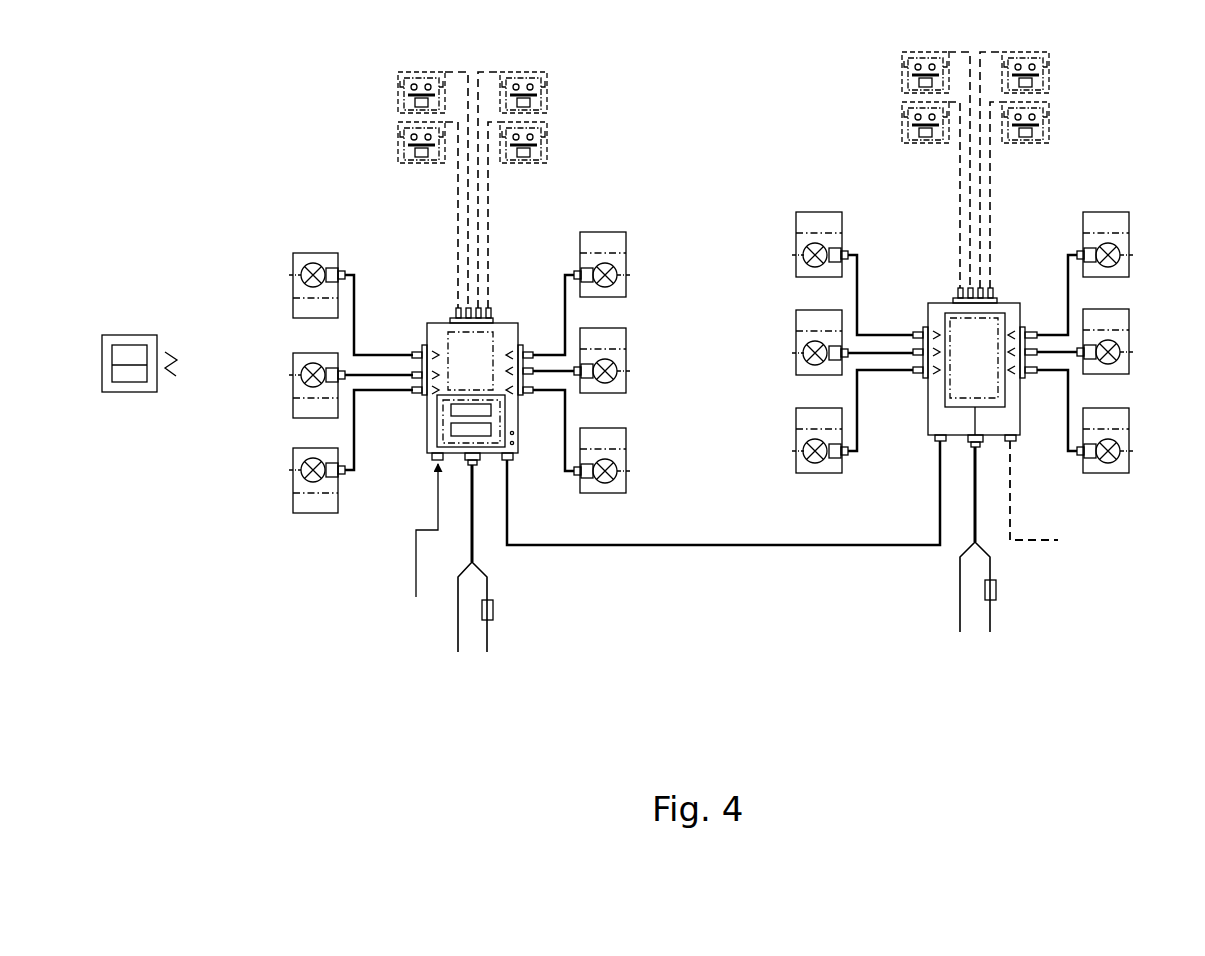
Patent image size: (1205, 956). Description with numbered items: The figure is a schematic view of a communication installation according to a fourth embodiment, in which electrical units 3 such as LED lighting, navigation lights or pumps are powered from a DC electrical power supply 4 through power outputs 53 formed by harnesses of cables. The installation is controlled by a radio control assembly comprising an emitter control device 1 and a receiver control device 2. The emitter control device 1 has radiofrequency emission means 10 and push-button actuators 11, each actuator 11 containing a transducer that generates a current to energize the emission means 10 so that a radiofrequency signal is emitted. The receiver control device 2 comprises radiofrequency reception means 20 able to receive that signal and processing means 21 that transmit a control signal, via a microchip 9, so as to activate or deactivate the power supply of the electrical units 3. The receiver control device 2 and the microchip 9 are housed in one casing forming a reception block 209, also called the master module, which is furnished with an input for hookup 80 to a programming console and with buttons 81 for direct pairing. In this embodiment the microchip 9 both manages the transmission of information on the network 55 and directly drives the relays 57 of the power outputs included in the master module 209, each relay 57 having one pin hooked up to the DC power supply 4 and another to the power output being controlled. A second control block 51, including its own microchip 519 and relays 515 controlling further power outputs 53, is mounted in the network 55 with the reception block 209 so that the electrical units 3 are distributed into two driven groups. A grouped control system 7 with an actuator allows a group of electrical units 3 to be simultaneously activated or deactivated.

The emitter control device 1 is at (104, 367).
The receiver control device 2 is at (437, 457).
The electrical unit 3 is at (296, 264).
The electrical power supply 4 is at (471, 655).
The grouped control system 7 is at (407, 157).
The microchip 9 is at (470, 361).
The radiofrequency emission means 10 is at (89, 350).
The actuator 11 is at (123, 353).
The radiofrequency reception means 20 is at (474, 445).
The processing means 21 is at (462, 408).
The control block 51 is at (972, 378).
The power output 53 is at (355, 266).
The network 55 is at (799, 552).
The relay 57 is at (508, 340).
The input for hookup 80 is at (417, 553).
The button for direct pairing 81 is at (515, 452).
The reception block 209 is at (461, 362).
The relay 515 is at (1012, 381).
The microchip 519 is at (975, 360).